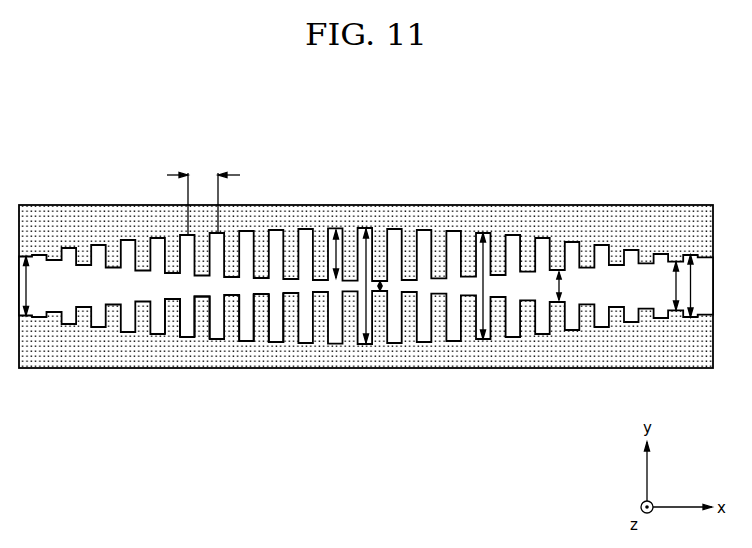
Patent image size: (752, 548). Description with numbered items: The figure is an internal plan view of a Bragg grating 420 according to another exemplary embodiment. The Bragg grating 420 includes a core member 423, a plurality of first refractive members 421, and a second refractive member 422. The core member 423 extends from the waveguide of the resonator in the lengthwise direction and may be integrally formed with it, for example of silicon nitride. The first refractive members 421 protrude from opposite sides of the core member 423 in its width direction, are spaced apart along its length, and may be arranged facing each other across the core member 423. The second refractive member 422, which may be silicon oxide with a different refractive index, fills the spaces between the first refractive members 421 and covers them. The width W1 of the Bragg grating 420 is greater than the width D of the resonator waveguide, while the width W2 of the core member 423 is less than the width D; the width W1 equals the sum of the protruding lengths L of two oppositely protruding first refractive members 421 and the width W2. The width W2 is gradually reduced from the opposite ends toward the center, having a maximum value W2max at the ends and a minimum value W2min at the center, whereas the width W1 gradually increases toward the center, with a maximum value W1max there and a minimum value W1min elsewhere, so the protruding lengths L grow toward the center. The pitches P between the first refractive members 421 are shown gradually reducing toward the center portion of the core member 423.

The Bragg grating 420 is at (85, 386).
The first refractive members 421 is at (277, 340).
The second refractive member 422 is at (205, 337).
The core member 423 is at (143, 290).
The width of the waveguide D is at (28, 285).
The pitch P is at (203, 194).
The protruding length L is at (333, 252).
The width of the Bragg grating W1 is at (483, 283).
The maximum value of the width W1 W1max is at (366, 284).
The minimum value of the width W1 W1min is at (692, 258).
The width of the core member W2 is at (560, 284).
The maximum value of the width W2 W2max is at (676, 264).
The minimum value of the width W2 W2min is at (385, 287).